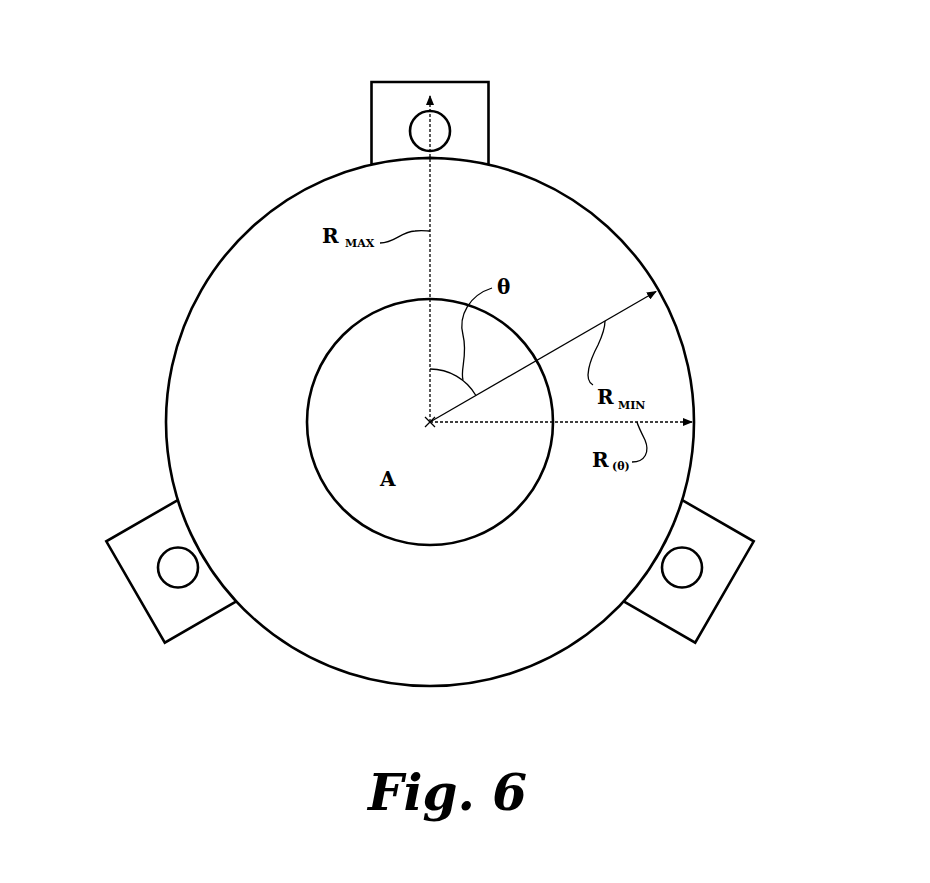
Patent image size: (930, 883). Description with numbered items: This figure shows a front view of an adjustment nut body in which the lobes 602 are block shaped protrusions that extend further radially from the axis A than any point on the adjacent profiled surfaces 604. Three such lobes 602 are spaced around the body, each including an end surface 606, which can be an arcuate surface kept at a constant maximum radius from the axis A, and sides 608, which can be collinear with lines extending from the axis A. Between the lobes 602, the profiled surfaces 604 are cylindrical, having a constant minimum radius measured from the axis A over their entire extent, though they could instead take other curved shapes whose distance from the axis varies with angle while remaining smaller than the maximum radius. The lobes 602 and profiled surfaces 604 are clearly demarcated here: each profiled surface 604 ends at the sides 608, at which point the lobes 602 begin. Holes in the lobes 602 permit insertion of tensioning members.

The lobes 602 is at (455, 82).
The profiled surfaces 604 is at (617, 228).
The end surface 606 is at (398, 82).
The sides 608 is at (371, 127).